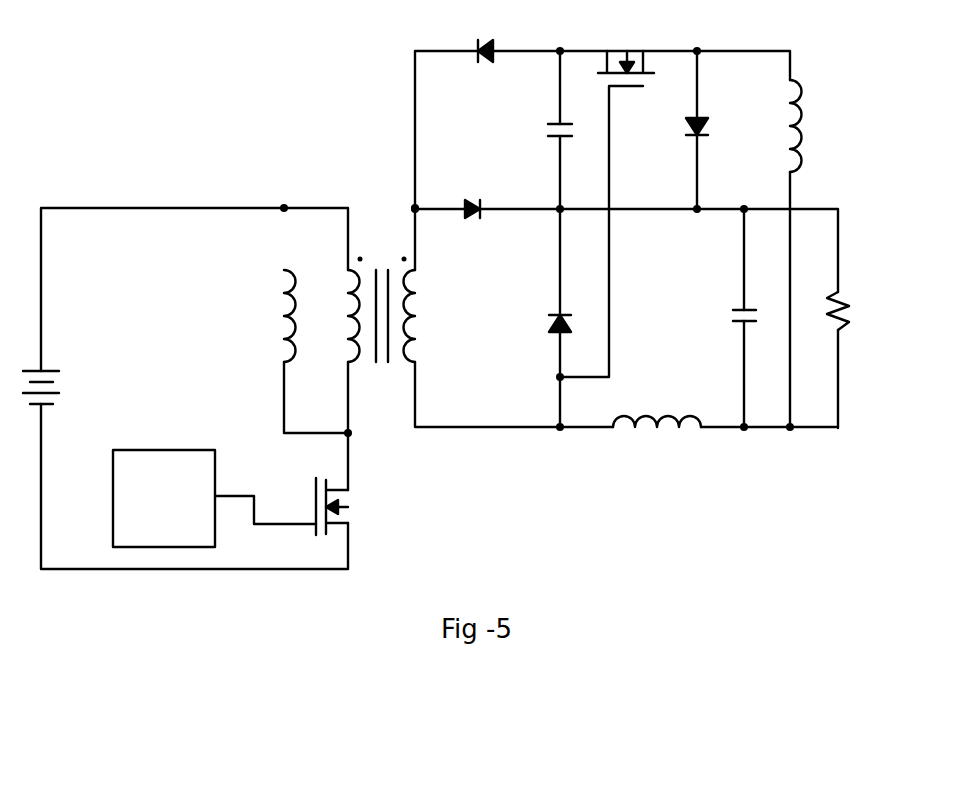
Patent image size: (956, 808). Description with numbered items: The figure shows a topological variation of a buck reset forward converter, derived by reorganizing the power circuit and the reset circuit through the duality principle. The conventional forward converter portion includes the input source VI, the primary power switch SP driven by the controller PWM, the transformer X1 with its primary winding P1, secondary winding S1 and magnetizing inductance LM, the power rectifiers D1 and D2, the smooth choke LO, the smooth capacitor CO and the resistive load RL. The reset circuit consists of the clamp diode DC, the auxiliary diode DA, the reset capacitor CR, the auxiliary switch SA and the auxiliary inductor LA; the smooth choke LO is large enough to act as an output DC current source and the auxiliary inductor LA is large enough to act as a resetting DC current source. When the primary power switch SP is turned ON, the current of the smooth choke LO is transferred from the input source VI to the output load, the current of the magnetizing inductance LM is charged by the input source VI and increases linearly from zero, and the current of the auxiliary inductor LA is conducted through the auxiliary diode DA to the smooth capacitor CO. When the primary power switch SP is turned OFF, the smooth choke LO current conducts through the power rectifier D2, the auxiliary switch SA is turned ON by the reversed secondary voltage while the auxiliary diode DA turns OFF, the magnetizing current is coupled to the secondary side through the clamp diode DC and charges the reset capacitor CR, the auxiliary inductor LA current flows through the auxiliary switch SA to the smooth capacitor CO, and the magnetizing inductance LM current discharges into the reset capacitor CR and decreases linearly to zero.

The input source VI is at (52, 390).
The magnetizing inductance LM is at (272, 316).
The transformer primary winding P1 is at (337, 316).
The transformer X1 is at (382, 293).
The transformer secondary winding S1 is at (422, 316).
The controller PWM is at (214, 498).
The primary switch SP is at (349, 506).
The clamp diode DC is at (481, 38).
The auxiliary switch SA is at (626, 54).
The reset capacitor CR is at (540, 134).
The auxiliary diode DA is at (713, 130).
The auxiliary inductor LA is at (810, 126).
The power rectifier D1 is at (471, 196).
The power rectifier D2 is at (541, 328).
The smooth capacitor CO is at (725, 320).
The resistive load RL is at (852, 312).
The smooth choke LO is at (657, 442).